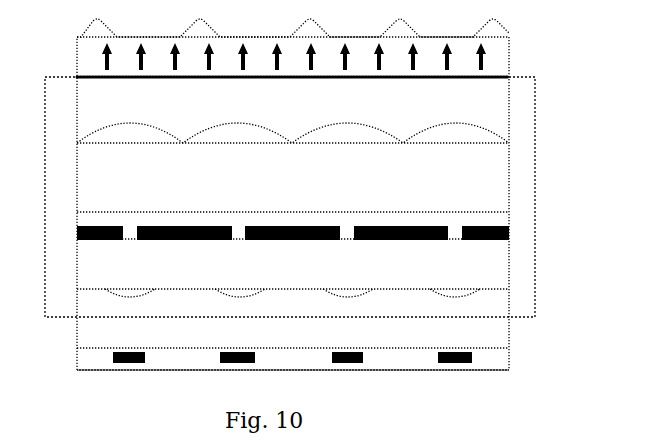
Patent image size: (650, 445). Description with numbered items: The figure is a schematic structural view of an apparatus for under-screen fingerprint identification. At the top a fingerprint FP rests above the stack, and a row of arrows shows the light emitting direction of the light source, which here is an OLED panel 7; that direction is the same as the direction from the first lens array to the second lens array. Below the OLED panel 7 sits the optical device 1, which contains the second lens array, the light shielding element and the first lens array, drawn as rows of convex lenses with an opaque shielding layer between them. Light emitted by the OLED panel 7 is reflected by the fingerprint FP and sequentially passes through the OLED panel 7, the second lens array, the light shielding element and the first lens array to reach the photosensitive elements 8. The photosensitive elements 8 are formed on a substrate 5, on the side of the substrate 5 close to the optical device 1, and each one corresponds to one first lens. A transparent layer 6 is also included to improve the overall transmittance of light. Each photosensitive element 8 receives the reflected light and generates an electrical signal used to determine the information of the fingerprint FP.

The optical device 1 is at (535, 197).
The substrate 5 is at (493, 359).
The transparent layer 6 is at (490, 329).
The OLED panel 7 is at (493, 60).
The photosensitive element 8 is at (113, 358).
The fingerprint FP is at (503, 25).